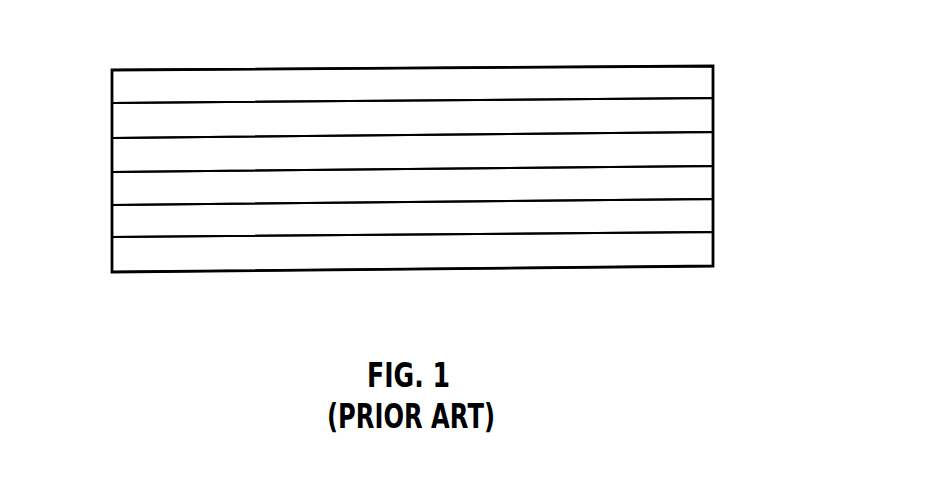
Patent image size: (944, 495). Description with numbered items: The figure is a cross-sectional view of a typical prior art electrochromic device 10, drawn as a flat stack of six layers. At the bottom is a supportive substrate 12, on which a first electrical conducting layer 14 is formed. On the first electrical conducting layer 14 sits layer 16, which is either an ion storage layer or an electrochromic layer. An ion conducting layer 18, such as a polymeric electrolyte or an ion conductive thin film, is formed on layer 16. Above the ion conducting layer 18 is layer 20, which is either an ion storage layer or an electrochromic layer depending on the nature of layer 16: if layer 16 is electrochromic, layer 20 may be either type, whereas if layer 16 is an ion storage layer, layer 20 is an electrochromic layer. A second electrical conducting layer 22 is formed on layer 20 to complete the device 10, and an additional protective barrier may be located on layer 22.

The electrochromic device 10 is at (743, 96).
The supportive substrate 12 is at (687, 247).
The first electrical conducting layer 14 is at (141, 222).
The ion storage layer or electrochromic layer 16 is at (687, 182).
The ion conducting layer 18 is at (687, 153).
The ion storage layer or electrochromic layer 20 is at (130, 122).
The second electrical conducting layer 22 is at (150, 85).